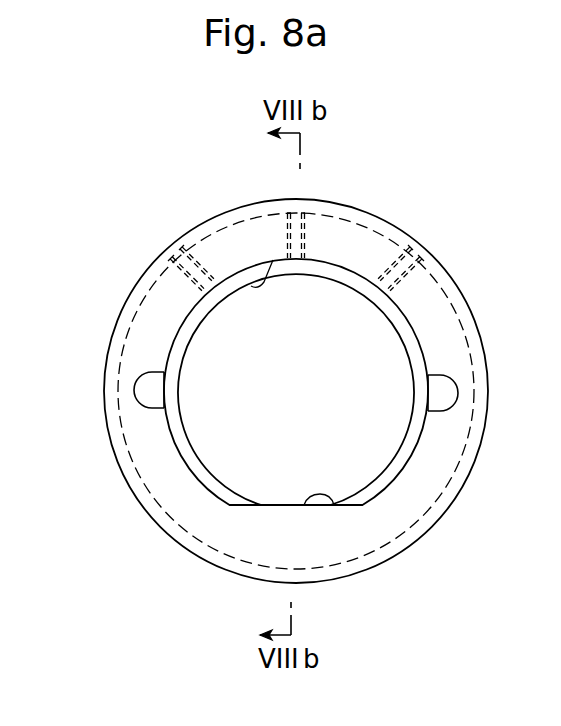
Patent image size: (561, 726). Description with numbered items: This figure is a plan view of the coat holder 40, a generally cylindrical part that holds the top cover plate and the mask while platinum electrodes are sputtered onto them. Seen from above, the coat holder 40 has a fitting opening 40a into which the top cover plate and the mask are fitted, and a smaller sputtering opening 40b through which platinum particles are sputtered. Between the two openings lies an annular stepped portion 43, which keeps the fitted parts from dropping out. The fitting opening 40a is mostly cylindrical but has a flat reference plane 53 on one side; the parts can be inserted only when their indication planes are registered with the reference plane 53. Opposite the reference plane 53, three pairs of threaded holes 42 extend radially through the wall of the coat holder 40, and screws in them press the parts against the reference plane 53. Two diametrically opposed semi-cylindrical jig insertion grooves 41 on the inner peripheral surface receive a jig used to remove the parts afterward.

The coat holder 40 is at (438, 198).
The fitting opening 40a is at (250, 288).
The sputtering opening 40b is at (196, 331).
The jig insertion grooves 41 is at (142, 396).
The threaded holes 42 is at (176, 260).
The annular stepped portion 43 is at (186, 456).
The reference plane 53 is at (325, 505).